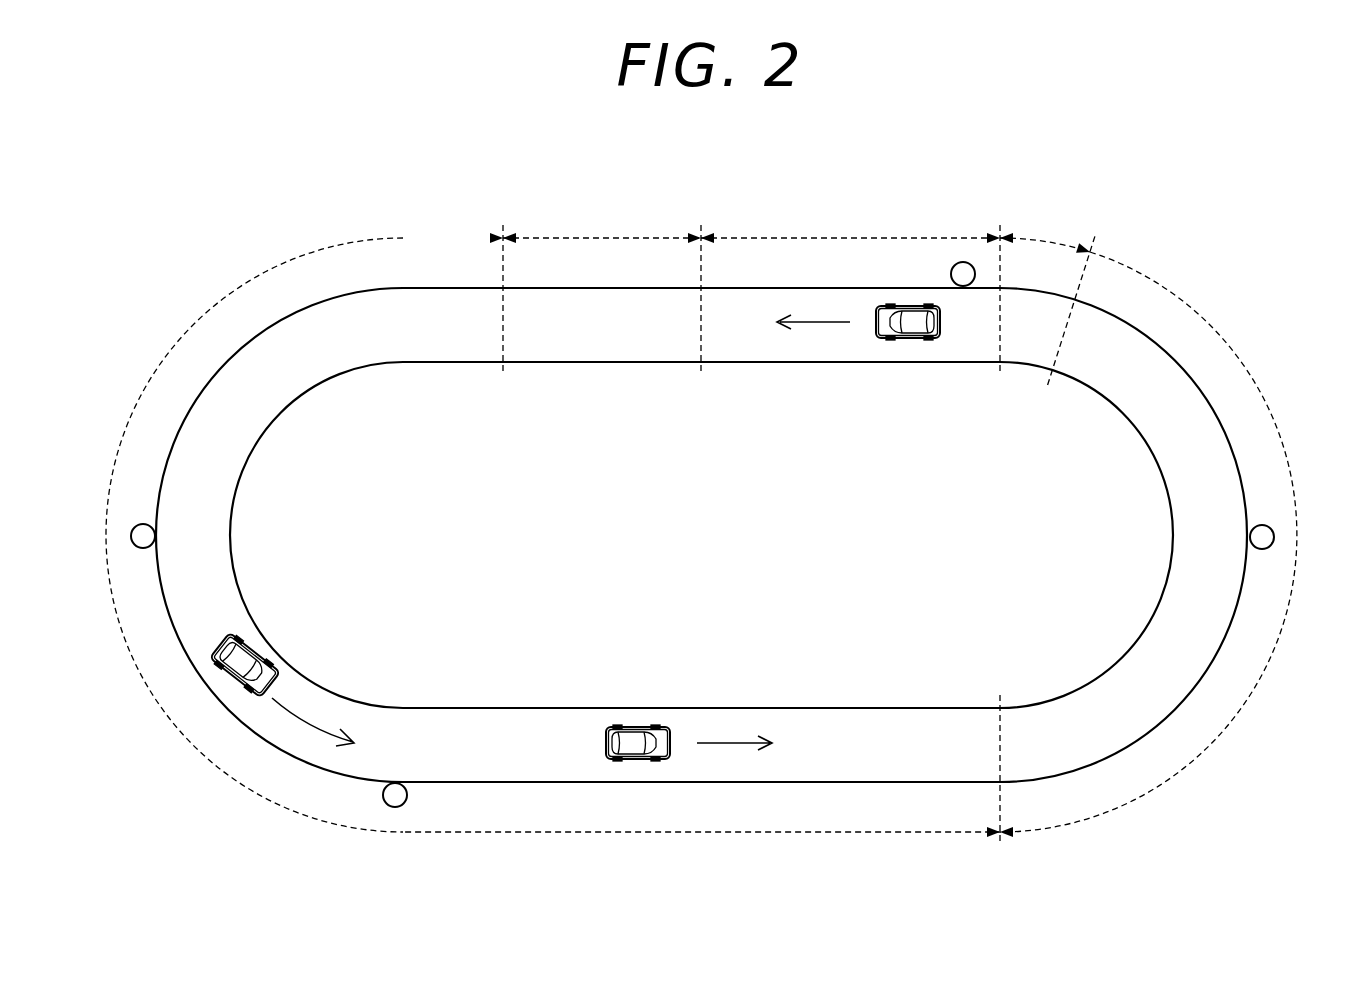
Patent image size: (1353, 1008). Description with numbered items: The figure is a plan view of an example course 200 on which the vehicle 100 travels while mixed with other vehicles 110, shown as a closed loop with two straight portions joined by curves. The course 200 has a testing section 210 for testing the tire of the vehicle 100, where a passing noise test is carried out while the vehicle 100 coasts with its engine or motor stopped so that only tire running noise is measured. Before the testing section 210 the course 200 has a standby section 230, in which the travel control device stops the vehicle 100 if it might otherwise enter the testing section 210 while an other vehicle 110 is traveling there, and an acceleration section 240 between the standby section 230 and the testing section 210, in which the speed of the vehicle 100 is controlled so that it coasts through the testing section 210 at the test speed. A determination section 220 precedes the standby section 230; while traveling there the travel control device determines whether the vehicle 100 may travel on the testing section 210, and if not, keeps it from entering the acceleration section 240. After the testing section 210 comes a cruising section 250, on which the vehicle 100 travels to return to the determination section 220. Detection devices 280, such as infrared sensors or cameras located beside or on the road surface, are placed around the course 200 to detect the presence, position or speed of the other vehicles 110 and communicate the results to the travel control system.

The course 200 is at (1176, 208).
The testing section 210 is at (615, 237).
The determination section 220 is at (1151, 791).
The standby section 230 is at (1043, 241).
The acceleration section 240 is at (848, 237).
The cruising section 250 is at (315, 250).
The detection device 280 is at (143, 534).
The vehicle 100 is at (890, 326).
The other vehicle 110 is at (630, 742).